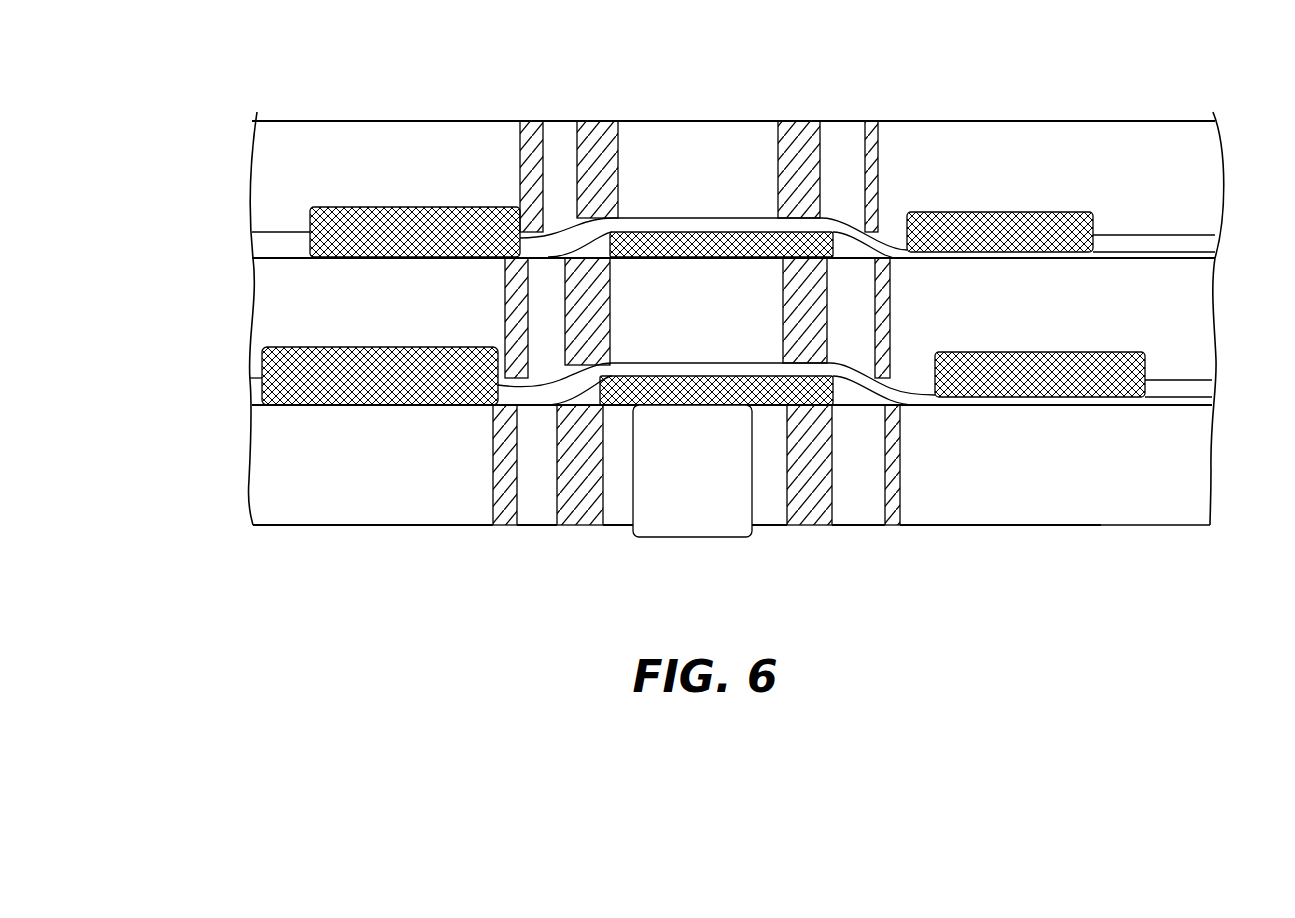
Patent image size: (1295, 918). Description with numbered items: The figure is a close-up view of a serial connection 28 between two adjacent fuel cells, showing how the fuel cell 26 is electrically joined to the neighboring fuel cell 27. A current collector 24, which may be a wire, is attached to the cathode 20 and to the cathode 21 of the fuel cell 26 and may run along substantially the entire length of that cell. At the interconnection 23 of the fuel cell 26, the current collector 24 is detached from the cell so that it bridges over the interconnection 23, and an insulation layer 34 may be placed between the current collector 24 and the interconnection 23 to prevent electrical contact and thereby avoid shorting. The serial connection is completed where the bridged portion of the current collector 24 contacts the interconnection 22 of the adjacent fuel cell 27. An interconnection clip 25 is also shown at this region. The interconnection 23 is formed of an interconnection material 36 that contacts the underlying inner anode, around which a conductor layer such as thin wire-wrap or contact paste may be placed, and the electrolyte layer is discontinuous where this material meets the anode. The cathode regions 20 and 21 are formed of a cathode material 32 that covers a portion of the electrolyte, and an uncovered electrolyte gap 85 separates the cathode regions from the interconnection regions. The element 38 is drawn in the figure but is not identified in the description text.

The cathode 20 is at (275, 462).
The cathode 21 is at (1087, 503).
The interconnection 22 is at (757, 280).
The interconnection 23 is at (617, 487).
The current collector 24 is at (547, 387).
The interconnection clip 25 is at (700, 487).
The fuel cell 26 is at (1193, 477).
The fuel cell 27 is at (1182, 300).
The serial connection 28 is at (713, 368).
The cathode material 32 is at (510, 507).
The insulation layer 34 is at (670, 378).
The interconnection material 36 is at (585, 503).
The contact pad 38 is at (1150, 353).
The uncovered electrolyte gap 85 is at (538, 503).